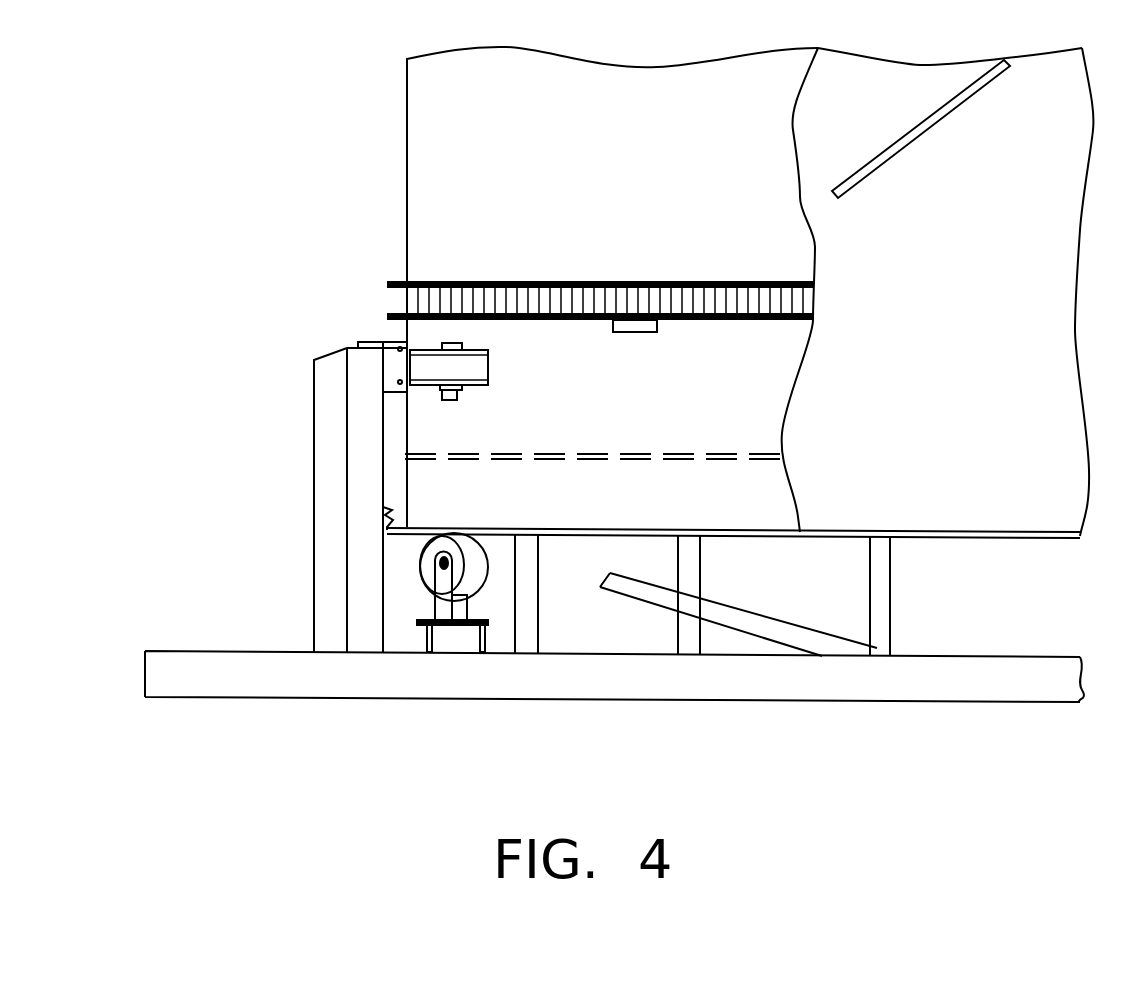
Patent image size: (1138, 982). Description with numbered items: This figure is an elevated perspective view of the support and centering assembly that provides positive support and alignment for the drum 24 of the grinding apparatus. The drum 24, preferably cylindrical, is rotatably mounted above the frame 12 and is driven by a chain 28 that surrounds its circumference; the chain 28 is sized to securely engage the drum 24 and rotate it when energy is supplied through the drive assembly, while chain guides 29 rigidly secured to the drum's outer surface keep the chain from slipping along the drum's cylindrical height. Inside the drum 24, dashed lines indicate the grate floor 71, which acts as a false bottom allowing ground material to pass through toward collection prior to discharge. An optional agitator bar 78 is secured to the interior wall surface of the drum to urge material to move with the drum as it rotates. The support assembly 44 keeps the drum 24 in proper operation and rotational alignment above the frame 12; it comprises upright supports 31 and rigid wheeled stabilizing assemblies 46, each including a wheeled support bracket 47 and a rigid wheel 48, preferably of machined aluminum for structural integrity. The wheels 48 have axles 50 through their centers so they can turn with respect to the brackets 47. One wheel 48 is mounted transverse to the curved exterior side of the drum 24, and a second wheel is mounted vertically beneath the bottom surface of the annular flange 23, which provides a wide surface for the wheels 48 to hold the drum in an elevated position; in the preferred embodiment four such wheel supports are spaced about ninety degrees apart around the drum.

The frame 12 is at (935, 655).
The annular flange 23 is at (392, 533).
The drum 24 is at (658, 150).
The chain 28 is at (547, 285).
The chain guide 29 is at (637, 332).
The upright support 31 is at (333, 482).
The support assembly 44 is at (307, 345).
The wheeled stabilizing assembly 46 is at (373, 340).
The wheel support bracket 47 is at (390, 373).
The rigid wheel 48 is at (488, 367).
The axle 50 is at (450, 400).
The grate floor 71 is at (593, 459).
The agitator bar 78 is at (903, 147).